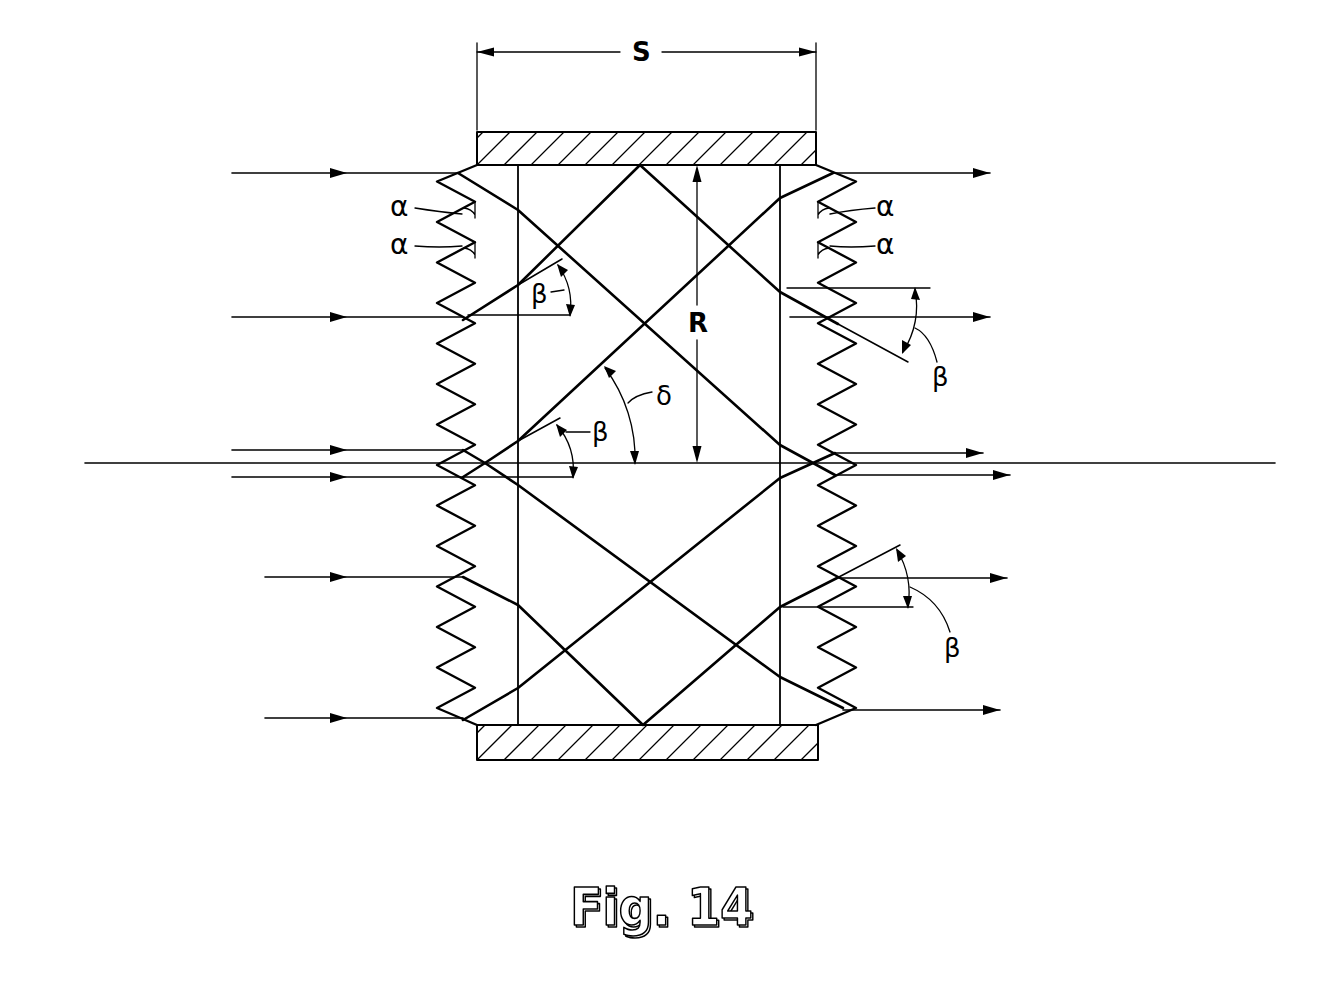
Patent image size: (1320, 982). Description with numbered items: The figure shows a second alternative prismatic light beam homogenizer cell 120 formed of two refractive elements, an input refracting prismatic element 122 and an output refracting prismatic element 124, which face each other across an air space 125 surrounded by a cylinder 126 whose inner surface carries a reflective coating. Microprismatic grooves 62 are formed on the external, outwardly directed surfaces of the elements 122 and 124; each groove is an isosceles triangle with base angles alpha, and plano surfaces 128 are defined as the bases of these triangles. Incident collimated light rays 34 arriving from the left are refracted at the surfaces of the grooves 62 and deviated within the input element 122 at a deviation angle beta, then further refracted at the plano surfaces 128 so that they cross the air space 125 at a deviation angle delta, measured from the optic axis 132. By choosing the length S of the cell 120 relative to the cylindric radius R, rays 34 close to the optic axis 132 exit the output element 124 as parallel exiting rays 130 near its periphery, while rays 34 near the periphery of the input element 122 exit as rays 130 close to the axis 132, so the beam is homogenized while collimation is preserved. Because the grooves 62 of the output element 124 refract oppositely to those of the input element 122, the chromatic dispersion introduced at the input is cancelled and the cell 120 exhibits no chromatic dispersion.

The second alternative prismatic light beam homogenizer cell 120 is at (801, 423).
The cylinder 126 is at (650, 131).
The output refracting prismatic element 124 is at (802, 702).
The air space 125 is at (763, 711).
The microprismatic grooves 62 is at (457, 407).
The input refracting prismatic element 122 is at (500, 640).
The plano surfaces 128 is at (822, 418).
The incident collimated light rays 34 is at (288, 478).
The exiting light rays 130 is at (947, 450).
The optic axis 132 is at (1150, 463).